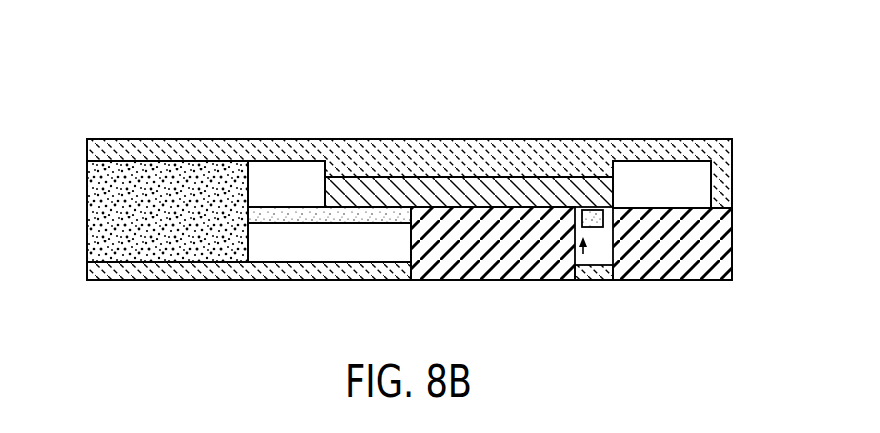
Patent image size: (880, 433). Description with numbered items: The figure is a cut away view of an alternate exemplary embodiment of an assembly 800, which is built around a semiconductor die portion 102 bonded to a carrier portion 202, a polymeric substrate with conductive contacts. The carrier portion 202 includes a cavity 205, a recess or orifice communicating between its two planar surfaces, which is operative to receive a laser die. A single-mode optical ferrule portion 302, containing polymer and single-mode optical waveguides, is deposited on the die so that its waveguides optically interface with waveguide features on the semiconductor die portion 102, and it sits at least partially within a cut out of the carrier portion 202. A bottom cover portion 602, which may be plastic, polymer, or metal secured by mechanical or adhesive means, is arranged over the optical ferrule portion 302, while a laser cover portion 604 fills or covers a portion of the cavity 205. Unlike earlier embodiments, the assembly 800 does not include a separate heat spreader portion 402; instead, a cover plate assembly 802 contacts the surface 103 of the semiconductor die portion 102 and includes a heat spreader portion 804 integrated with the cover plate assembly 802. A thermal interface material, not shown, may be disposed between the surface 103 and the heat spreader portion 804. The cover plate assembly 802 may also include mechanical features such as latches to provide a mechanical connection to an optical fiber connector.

The assembly 800 is at (333, 70).
The heat spreader portion 804 is at (382, 150).
The heat spreader portion 402 is at (474, 162).
The surface of the semiconductor die portion 103 is at (537, 172).
The cover plate assembly 802 is at (621, 157).
The semiconductor die portion 102 is at (590, 203).
The optical ferrule portion 302 is at (104, 203).
The bottom cover portion 602 is at (84, 279).
The carrier portion 202 is at (713, 268).
The laser cover portion 604 is at (596, 270).
The cavity 205 is at (576, 266).